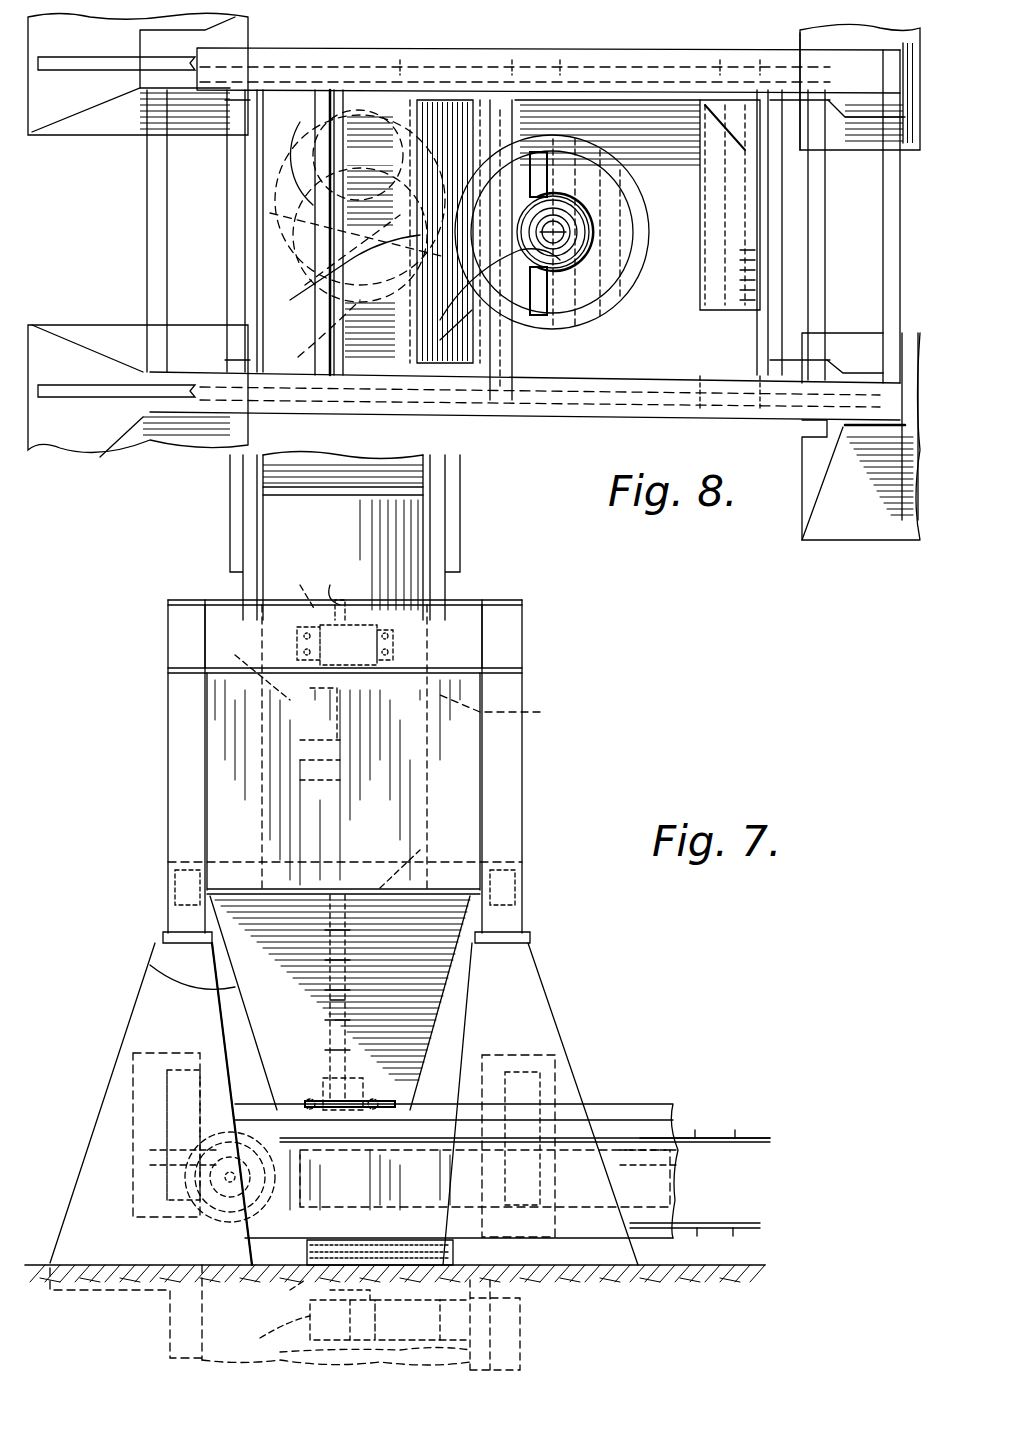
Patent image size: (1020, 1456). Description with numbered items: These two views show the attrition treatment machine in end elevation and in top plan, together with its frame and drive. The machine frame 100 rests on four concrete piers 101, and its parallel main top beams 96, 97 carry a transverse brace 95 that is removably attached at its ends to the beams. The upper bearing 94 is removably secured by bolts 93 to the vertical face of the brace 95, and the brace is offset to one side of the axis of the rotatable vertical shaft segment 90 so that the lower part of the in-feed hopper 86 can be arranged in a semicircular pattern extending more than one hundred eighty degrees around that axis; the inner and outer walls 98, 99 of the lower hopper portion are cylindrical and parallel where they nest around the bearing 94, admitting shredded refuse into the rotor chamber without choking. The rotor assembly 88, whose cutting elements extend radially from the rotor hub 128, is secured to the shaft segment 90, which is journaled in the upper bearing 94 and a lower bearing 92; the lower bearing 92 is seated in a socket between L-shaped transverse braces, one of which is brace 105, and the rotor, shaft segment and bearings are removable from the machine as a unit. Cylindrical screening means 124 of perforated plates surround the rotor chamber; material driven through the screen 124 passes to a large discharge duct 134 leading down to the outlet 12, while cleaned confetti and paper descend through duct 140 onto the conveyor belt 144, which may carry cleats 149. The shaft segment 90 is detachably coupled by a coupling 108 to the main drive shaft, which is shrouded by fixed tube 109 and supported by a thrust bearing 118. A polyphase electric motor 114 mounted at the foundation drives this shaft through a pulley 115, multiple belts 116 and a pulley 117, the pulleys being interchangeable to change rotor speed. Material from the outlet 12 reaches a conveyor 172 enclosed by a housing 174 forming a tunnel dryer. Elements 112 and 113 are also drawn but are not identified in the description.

In FIG. 7, the outlet 12 is at (277, 1112).
In FIG. 8, the in-feed hopper 86 is at (636, 208).
In FIG. 7, the in-feed hopper 86 is at (325, 533).
In FIG. 7, the rotor assembly 88 is at (480, 760).
In FIG. 8, the rotatable vertical shaft segment 90 is at (500, 294).
In FIG. 7, the rotatable vertical shaft segment 90 is at (330, 1005).
In FIG. 7, the lower bearing 92 is at (422, 860).
In FIG. 7, the bolts 93 is at (395, 645).
In FIG. 8, the upper bearing 94 is at (547, 291).
In FIG. 7, the upper bearing 94 is at (296, 587).
In FIG. 8, the transverse brace 95 is at (547, 174).
In FIG. 8, the main top beam 96 is at (565, 32).
In FIG. 8, the main top beam 97 is at (532, 414).
In FIG. 8, the inner wall 98 is at (575, 238).
In FIG. 8, the outer wall 99 is at (570, 250).
In FIG. 7, the machine frame 100 is at (168, 795).
In FIG. 8, the concrete piers 101 is at (93, 125).
In FIG. 7, the concrete piers 101 is at (135, 1017).
In FIG. 7, the transverse brace 105 is at (480, 870).
In FIG. 7, the coupling 108 is at (325, 1100).
In FIG. 7, the fixed tube 109 is at (325, 948).
In FIG. 8, the ring gear 112 is at (592, 230).
In FIG. 7, the ring gear 112 is at (340, 590).
In FIG. 8, the anchor rod 113 is at (78, 62).
In FIG. 8, the polyphase electric motor 114 is at (355, 195).
In FIG. 7, the polyphase electric motor 114 is at (400, 1325).
In FIG. 8, the pulley 115 is at (313, 200).
In FIG. 7, the pulley 115 is at (390, 1320).
In FIG. 8, the multiple belts 116 is at (349, 272).
In FIG. 7, the multiple belts 116 is at (300, 1250).
In FIG. 7, the pulley 117 is at (260, 1315).
In FIG. 7, the thrust bearing 118 is at (295, 1317).
In FIG. 8, the cylindrical screening means 124 is at (450, 100).
In FIG. 7, the cylindrical screening means 124 is at (516, 708).
In FIG. 7, the rotor hub 128 is at (249, 667).
In FIG. 8, the large discharge duct 134 is at (745, 278).
In FIG. 7, the large discharge duct 134 is at (150, 975).
In FIG. 8, the duct 140 is at (315, 333).
In FIG. 8, the conveyor belt 144 is at (345, 47).
In FIG. 7, the cleats 149 is at (700, 1132).
In FIG. 8, the conveyor 172 is at (760, 55).
In FIG. 7, the conveyor 172 is at (760, 1135).
In FIG. 7, the housing 174 is at (650, 1125).